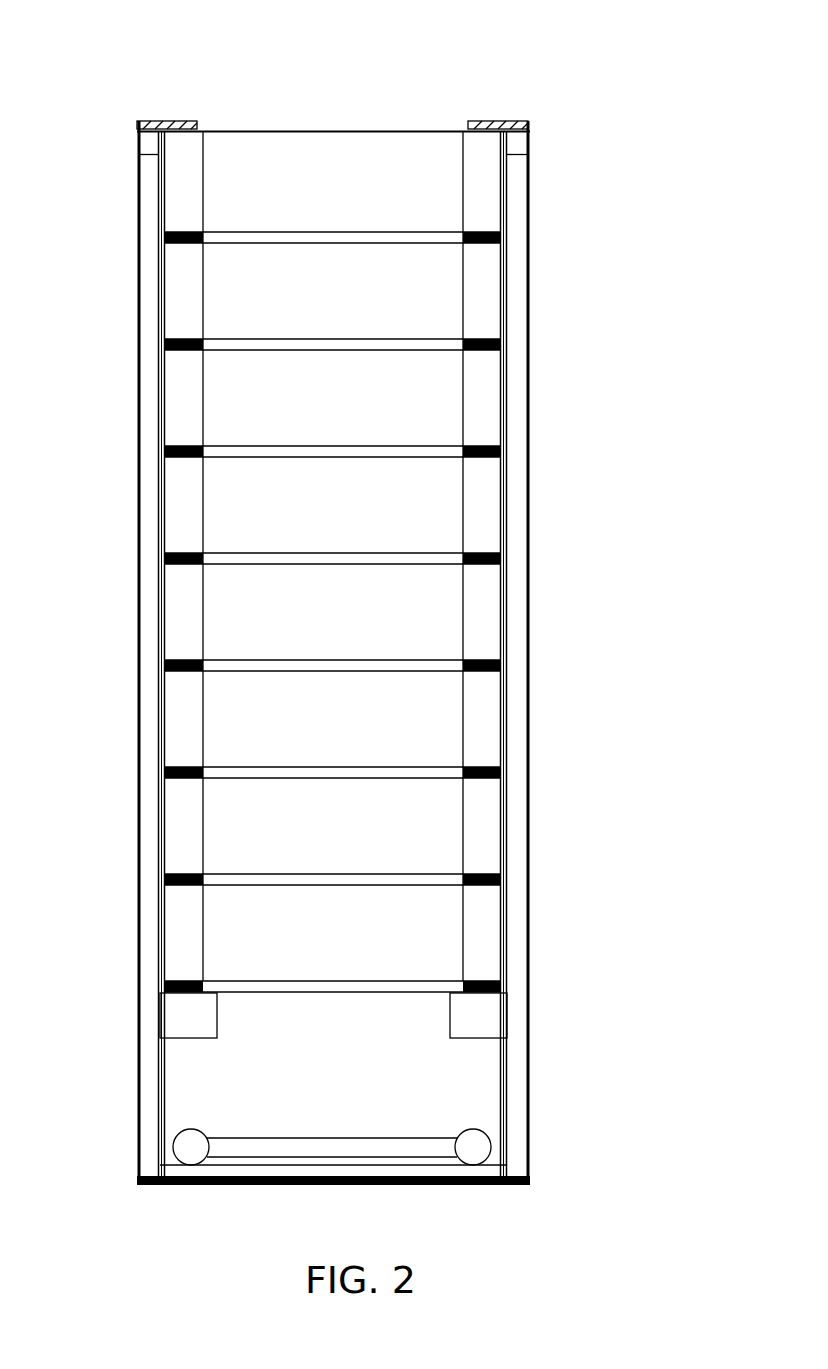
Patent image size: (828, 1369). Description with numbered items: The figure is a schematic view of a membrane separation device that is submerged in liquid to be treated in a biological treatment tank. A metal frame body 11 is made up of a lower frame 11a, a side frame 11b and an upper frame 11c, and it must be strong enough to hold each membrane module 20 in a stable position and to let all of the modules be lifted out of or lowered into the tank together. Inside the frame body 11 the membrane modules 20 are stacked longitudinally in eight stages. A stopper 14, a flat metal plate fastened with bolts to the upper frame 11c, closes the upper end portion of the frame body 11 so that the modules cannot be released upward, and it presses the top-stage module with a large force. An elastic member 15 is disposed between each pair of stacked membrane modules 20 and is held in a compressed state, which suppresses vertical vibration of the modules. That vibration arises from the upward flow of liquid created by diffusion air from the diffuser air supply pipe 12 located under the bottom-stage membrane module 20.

The frame body 11 is at (406, 642).
The lower frame 11a is at (492, 1010).
The side frame 11b is at (529, 397).
The upper frame 11c is at (518, 143).
The diffuser air supply pipe 12 is at (477, 1148).
The stopper 14 is at (170, 121).
The elastic member 15 is at (500, 235).
The membrane module 20 is at (233, 192).